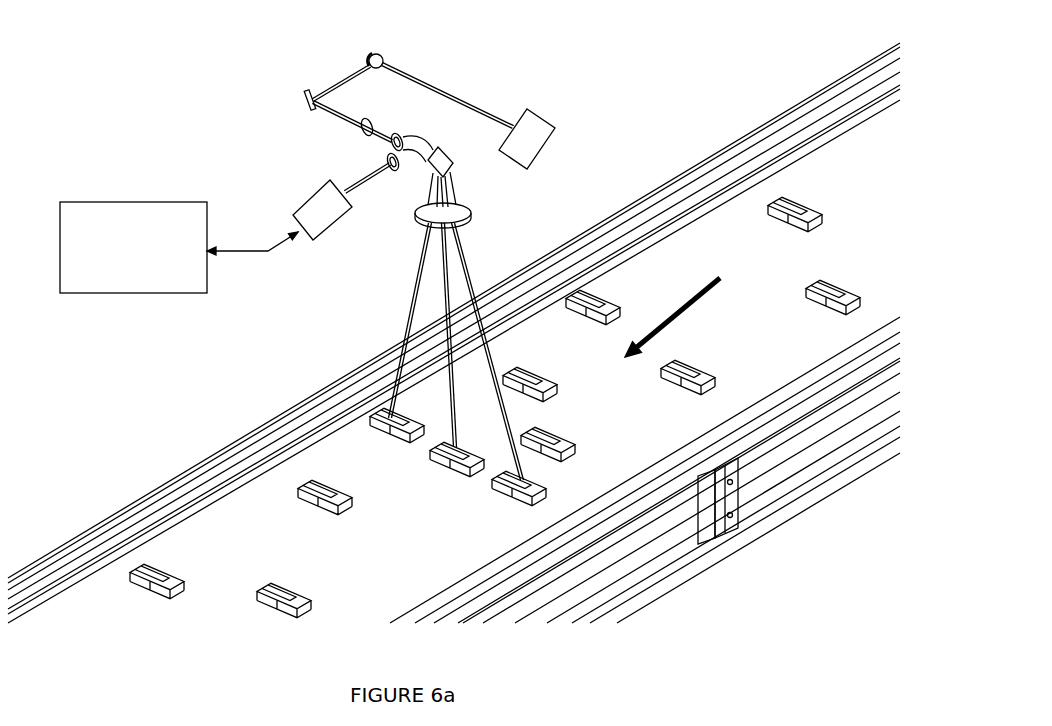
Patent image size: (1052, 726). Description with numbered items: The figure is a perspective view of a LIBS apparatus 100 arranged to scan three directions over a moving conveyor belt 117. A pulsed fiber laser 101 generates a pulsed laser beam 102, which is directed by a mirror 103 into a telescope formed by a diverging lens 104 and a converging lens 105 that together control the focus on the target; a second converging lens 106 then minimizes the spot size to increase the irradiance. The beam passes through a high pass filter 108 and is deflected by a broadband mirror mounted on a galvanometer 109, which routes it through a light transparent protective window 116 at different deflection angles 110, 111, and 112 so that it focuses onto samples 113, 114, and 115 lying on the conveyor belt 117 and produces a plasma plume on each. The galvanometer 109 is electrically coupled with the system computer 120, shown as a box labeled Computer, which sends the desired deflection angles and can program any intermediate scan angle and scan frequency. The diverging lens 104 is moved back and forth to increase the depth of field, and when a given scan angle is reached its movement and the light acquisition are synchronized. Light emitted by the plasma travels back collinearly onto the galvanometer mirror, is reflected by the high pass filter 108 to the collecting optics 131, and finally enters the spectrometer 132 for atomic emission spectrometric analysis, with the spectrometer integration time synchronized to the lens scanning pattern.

The LIBS apparatus 100 is at (135, 95).
The pulsed fiber laser 101 is at (536, 129).
The pulsed laser beam 102 is at (452, 101).
The mirror 103 is at (383, 57).
The diverging lens 104 is at (362, 128).
The converging lens 105 is at (393, 134).
The second converging lens 106 is at (410, 141).
The high pass filter 108 is at (428, 144).
The galvanometer 109 is at (452, 166).
The deflection angle 110 is at (412, 302).
The deflection angle 111 is at (453, 380).
The deflection angle 112 is at (470, 262).
The sample 113 is at (372, 423).
The sample 114 is at (447, 468).
The sample 115 is at (505, 498).
The light transparent protective window 116 is at (423, 218).
The conveyor belt 117 is at (843, 152).
The system computer 120 is at (108, 293).
The collecting optics 131 is at (385, 161).
The spectrometer 132 is at (325, 220).